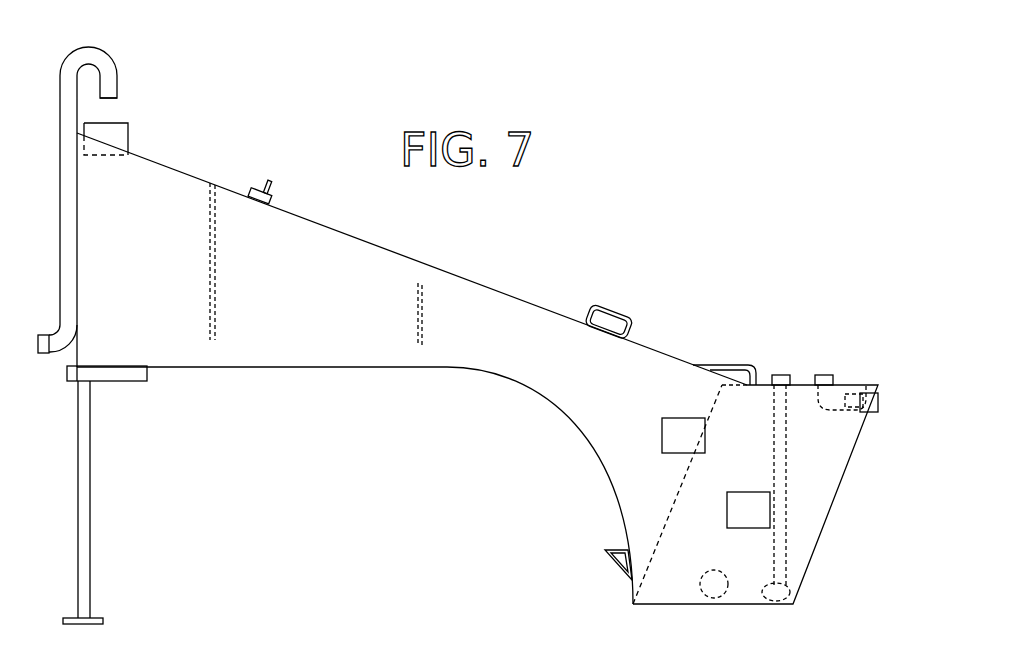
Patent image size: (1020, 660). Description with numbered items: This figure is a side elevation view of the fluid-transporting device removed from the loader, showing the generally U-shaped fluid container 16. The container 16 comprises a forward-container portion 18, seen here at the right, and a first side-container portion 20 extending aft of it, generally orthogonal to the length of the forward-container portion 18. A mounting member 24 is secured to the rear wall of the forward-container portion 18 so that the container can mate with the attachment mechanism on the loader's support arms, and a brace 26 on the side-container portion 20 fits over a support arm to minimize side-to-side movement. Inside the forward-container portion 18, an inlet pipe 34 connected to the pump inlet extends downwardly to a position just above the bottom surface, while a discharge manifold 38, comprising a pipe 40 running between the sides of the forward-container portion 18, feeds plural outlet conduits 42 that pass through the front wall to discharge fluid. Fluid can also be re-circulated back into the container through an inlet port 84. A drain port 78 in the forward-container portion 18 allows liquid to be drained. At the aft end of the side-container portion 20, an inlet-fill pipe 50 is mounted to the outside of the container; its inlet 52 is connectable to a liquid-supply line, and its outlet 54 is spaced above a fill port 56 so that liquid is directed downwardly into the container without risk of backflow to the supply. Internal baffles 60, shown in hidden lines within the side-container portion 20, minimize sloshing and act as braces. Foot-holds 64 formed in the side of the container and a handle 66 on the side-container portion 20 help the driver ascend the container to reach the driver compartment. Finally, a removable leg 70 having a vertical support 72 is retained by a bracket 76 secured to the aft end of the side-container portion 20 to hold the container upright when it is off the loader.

The fluid container 16 is at (477, 284).
The forward-container portion 18 is at (823, 528).
The first side-container portion 20 is at (366, 343).
The mounting member 24 is at (605, 552).
The brace 26 is at (272, 195).
The inlet pipe 34 is at (786, 462).
The discharge manifold 38 is at (845, 395).
The pipe 40 is at (860, 398).
The outlet conduit 42 is at (878, 406).
The inlet-fill pipe 50 is at (66, 106).
The inlet 52 is at (42, 335).
The outlet 54 is at (110, 86).
The fill port 56 is at (125, 138).
The internal baffle 60 is at (215, 252).
The foot-hold 64 is at (743, 517).
The handle 66 is at (618, 313).
The leg 70 is at (85, 524).
The vertical support 72 is at (90, 456).
The bracket 76 is at (102, 382).
The drain port 78 is at (703, 575).
The inlet port 84 is at (825, 378).